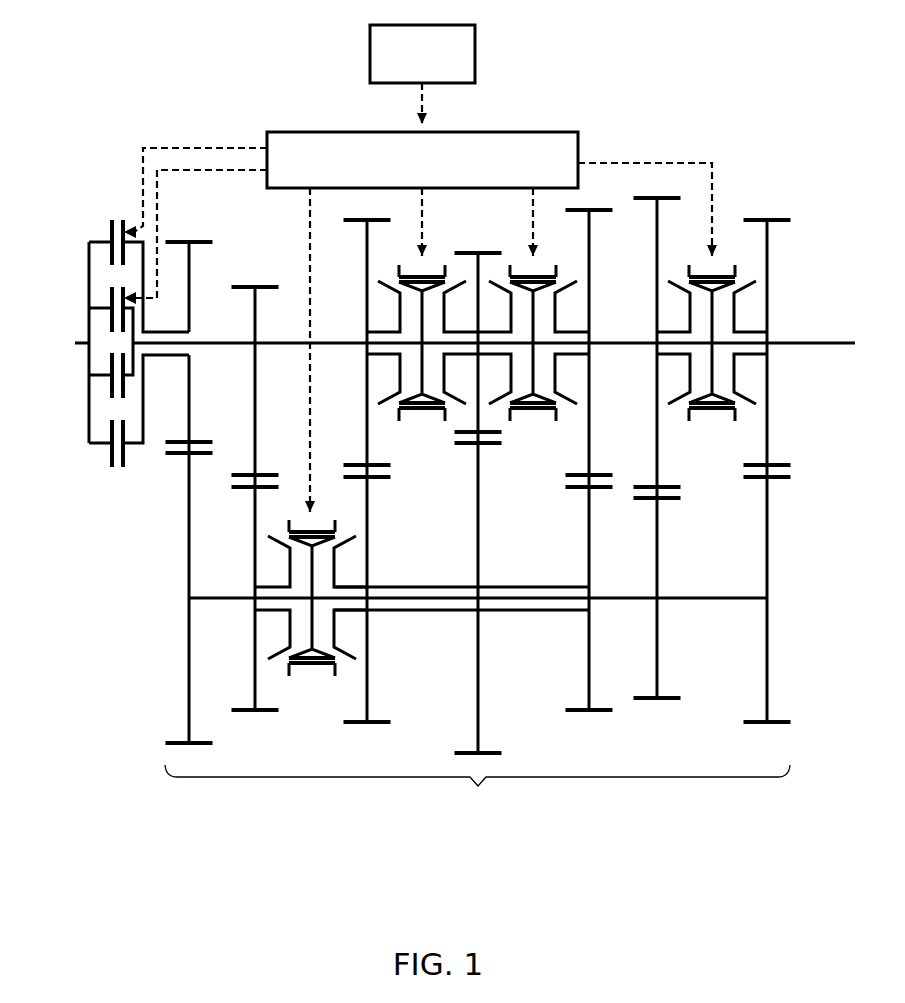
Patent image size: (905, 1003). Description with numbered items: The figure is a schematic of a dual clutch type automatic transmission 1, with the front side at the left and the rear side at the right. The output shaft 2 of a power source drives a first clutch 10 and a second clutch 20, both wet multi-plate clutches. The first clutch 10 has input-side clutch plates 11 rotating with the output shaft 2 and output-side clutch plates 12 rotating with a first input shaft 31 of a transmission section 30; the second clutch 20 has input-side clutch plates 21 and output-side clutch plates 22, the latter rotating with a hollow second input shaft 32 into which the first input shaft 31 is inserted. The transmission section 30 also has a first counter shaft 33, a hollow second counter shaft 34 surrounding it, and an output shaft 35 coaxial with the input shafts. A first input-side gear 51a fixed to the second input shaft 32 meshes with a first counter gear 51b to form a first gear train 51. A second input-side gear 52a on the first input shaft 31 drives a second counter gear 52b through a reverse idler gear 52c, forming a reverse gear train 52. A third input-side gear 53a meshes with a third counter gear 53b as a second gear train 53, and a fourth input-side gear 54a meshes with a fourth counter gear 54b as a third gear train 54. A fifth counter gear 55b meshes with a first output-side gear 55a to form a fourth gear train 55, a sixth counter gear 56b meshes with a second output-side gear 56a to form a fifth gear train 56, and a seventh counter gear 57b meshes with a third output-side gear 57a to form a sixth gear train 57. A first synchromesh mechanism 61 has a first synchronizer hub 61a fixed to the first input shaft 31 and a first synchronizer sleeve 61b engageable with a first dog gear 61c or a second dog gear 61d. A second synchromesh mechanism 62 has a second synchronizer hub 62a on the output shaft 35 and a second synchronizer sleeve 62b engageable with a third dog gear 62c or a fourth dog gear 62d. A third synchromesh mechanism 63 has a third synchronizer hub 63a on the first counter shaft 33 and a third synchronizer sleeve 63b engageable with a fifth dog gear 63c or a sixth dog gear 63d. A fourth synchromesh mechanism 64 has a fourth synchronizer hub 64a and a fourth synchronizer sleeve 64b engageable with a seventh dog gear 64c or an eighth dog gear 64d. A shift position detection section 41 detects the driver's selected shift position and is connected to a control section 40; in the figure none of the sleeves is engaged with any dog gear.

The automatic transmission 1 is at (92, 185).
The output shaft of power source 2 is at (75, 343).
The first clutch 10 is at (108, 300).
The input-side clutch plate 11 is at (108, 386).
The output-side clutch plate 12 is at (124, 378).
The second clutch 20 is at (108, 236).
The input-side clutch plate 21 is at (108, 455).
The output-side clutch plate 22 is at (125, 460).
The transmission section 30 is at (477, 787).
The first input shaft 31 is at (213, 341).
The second input shaft 32 is at (165, 358).
The first counter shaft 33 is at (220, 596).
The second counter shaft 34 is at (406, 585).
The output shaft 35 is at (619, 341).
The control section 40 is at (418, 297).
The shift position detection section 41 is at (422, 54).
The first gear train 51 is at (190, 238).
The first input-side gear 51a is at (213, 440).
The first counter gear 51b is at (174, 741).
The reverse gear train 52 is at (258, 272).
The second input-side gear 52a is at (268, 286).
The second counter gear 52b is at (268, 712).
The reverse idler gear 52c is at (266, 474).
The second gear train 53 is at (366, 730).
The third input-side gear 53a is at (362, 224).
The third counter gear 53b is at (380, 720).
The third gear train 54 is at (460, 710).
The fourth input-side gear 54a is at (475, 251).
The fourth counter gear 54b is at (490, 751).
The fourth gear train 55 is at (573, 652).
The first output-side gear 55a is at (600, 473).
The fifth counter gear 55b is at (577, 712).
The fifth gear train 56 is at (650, 624).
The second output-side gear 56a is at (636, 202).
The sixth counter gear 56b is at (643, 700).
The sixth gear train 57 is at (755, 622).
The third output-side gear 57a is at (757, 218).
The seventh counter gear 57b is at (756, 724).
The first synchromesh mechanism 61 is at (422, 367).
The first synchronizer hub 61a is at (408, 412).
The first synchronizer sleeve 61b is at (432, 412).
The first dog gear 61c is at (383, 280).
The second dog gear 61d is at (456, 280).
The second synchromesh mechanism 62 is at (533, 367).
The second synchronizer hub 62a is at (513, 412).
The second synchronizer sleeve 62b is at (536, 412).
The third dog gear 62c is at (501, 280).
The fourth dog gear 62d is at (566, 280).
The third synchromesh mechanism 63 is at (311, 633).
The third synchronizer hub 63a is at (292, 666).
The third synchronizer sleeve 63b is at (322, 666).
The fifth dog gear 63c is at (269, 536).
The sixth dog gear 63d is at (354, 535).
The fourth synchromesh mechanism 64 is at (712, 371).
The fourth synchronizer hub 64a is at (697, 412).
The fourth synchronizer sleeve 64b is at (724, 412).
The seventh dog gear 64c is at (680, 280).
The eighth dog gear 64d is at (738, 278).